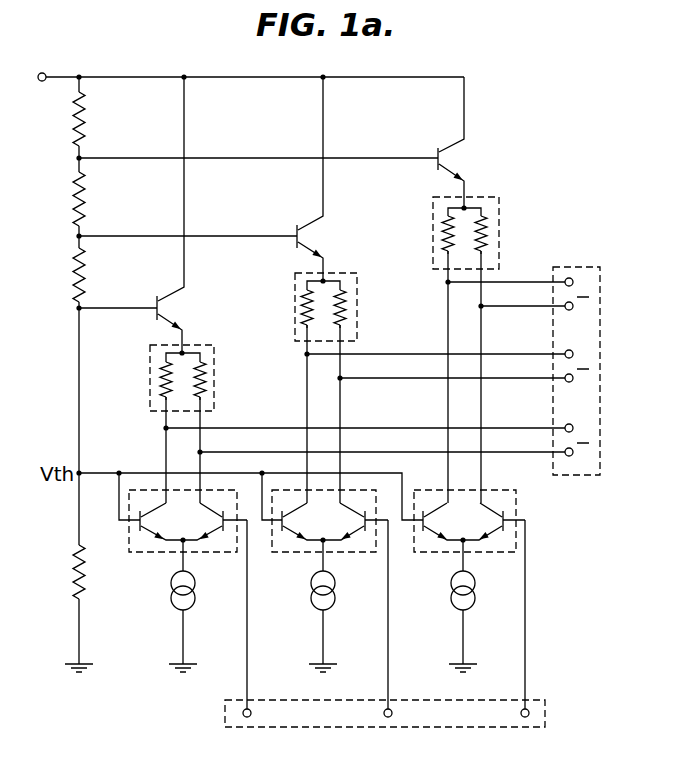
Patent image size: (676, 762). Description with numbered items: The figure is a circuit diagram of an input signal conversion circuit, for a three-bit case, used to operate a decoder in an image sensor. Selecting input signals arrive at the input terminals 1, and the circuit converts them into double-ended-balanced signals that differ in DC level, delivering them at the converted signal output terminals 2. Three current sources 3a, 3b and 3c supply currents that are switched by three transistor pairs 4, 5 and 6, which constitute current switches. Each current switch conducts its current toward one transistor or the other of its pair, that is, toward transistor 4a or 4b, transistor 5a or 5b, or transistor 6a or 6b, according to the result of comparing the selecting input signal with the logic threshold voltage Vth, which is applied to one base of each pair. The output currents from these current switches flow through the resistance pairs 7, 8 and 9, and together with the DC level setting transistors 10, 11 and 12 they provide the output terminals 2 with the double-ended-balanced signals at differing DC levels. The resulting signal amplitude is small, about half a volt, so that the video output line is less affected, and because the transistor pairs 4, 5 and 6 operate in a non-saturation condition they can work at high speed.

The input terminals 1 is at (225, 712).
The converted signal output terminals 2 is at (565, 267).
The current source 3a is at (170, 594).
The current source 3b is at (314, 606).
The current source 3c is at (474, 604).
The transistor pair 4 is at (174, 541).
The transistor 4a is at (144, 531).
The transistor 4b is at (214, 531).
The transistor pair 5 is at (319, 542).
The transistor 5a is at (288, 531).
The transistor 5b is at (356, 531).
The transistor pair 6 is at (465, 541).
The transistor 6a is at (428, 528).
The transistor 6b is at (496, 531).
The resistance pair 7 is at (150, 373).
The resistance pair 8 is at (295, 302).
The resistance pair 9 is at (433, 233).
The DC level setting transistor 10 is at (174, 292).
The DC level setting transistor 11 is at (312, 228).
The DC level setting transistor 12 is at (452, 142).